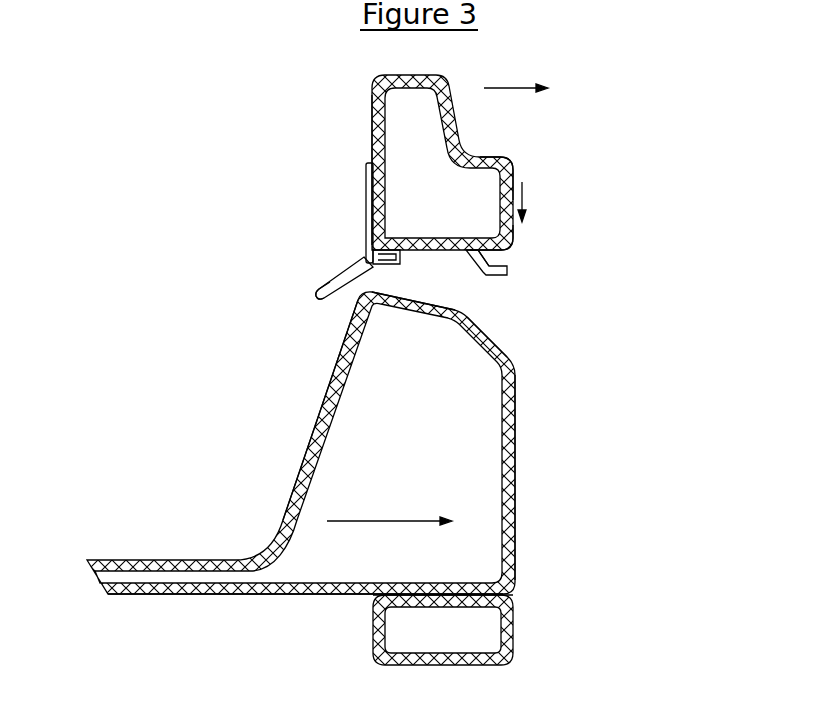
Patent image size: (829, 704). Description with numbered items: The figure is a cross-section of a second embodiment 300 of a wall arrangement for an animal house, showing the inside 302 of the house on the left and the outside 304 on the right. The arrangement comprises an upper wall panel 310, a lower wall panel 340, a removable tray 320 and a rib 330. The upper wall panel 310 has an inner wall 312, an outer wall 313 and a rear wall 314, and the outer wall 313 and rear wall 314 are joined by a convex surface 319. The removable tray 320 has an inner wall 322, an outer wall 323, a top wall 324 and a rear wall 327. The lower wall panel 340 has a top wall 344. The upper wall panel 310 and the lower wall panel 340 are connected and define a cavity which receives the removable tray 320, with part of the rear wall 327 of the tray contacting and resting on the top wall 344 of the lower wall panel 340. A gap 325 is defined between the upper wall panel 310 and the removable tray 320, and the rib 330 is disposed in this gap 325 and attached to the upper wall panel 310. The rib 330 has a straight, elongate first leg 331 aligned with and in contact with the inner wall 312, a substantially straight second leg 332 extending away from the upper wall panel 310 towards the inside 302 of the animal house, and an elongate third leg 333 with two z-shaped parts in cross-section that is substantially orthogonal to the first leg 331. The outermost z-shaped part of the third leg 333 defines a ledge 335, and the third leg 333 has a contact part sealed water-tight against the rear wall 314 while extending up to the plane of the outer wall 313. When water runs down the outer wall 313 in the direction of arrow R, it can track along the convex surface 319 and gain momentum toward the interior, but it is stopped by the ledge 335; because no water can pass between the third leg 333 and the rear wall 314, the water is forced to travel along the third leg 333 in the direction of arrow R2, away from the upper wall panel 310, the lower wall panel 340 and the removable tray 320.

The second embodiment 300 is at (696, 85).
The inside of the animal house 302 is at (130, 180).
The outside of the animal house 304 is at (765, 181).
The upper wall panel 310 is at (428, 127).
The inner wall 312 is at (372, 145).
The outer wall 313 is at (508, 169).
The rear wall 314 is at (385, 242).
The convex surface 319 is at (510, 242).
The removable tray 320 is at (450, 430).
The inner wall 322 is at (322, 420).
The outer wall 323 is at (515, 388).
The top wall 324 is at (475, 318).
The gap 325 is at (433, 292).
The rear wall 327 is at (505, 586).
The rib 330 is at (505, 270).
The first leg 331 is at (366, 204).
The second leg 332 is at (318, 290).
The third leg 333 is at (366, 263).
The ledge 335 is at (487, 256).
The lower wall panel 340 is at (455, 637).
The top wall 344 is at (500, 598).